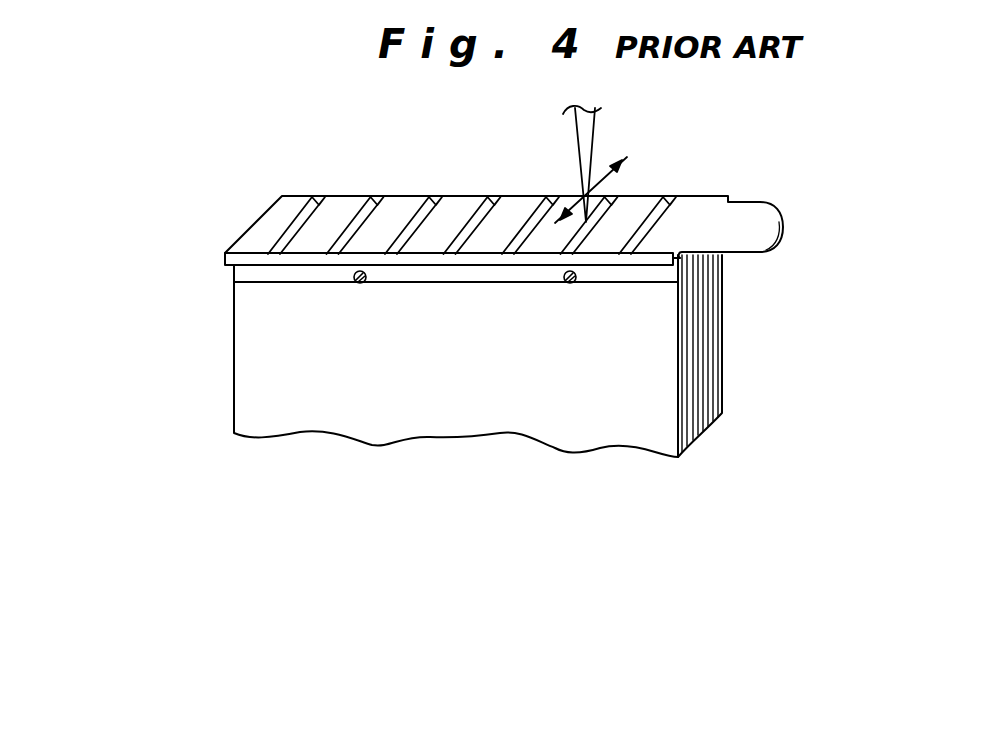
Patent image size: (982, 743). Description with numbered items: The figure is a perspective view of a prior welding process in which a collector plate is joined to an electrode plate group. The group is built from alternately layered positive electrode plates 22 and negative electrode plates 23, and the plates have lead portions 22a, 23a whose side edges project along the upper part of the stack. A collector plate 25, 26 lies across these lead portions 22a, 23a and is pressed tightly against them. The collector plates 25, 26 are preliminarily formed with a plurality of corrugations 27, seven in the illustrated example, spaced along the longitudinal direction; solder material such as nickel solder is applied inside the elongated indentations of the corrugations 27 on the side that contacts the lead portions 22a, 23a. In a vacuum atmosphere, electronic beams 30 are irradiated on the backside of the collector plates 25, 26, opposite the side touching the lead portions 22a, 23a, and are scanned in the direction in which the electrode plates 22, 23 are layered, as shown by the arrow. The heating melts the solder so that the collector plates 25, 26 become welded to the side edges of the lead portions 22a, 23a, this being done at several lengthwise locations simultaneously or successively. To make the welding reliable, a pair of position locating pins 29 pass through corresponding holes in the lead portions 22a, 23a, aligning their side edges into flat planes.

The positive electrode plates 22 is at (397, 356).
The negative electrode plates 23 is at (247, 368).
The lead portions 22a is at (362, 294).
The lead portions 23a is at (243, 275).
The collector plate 25 is at (444, 230).
The collector plate 26 is at (270, 228).
The corrugations 27 is at (423, 208).
The position locating pins 29 is at (364, 282).
The electronic beams 30 is at (592, 137).